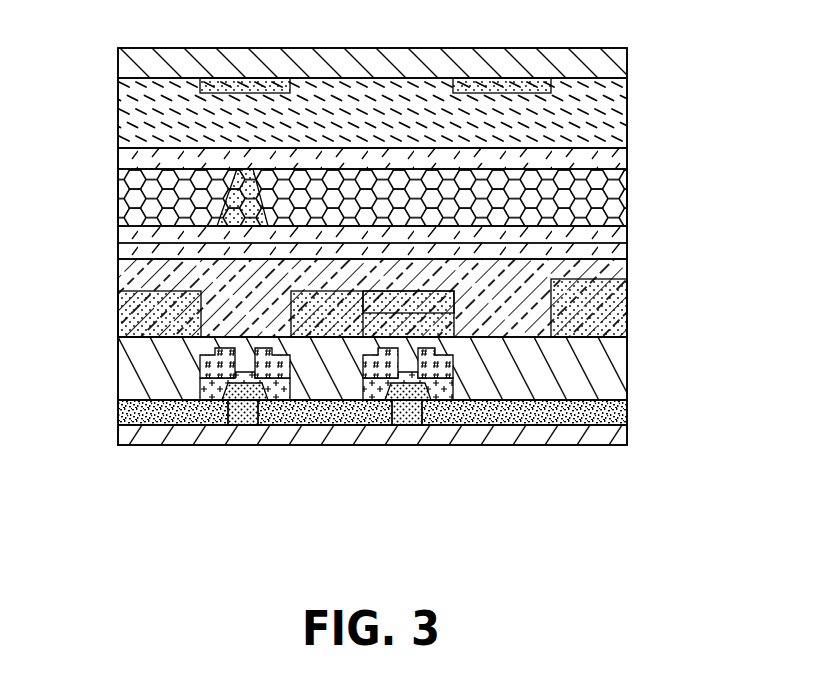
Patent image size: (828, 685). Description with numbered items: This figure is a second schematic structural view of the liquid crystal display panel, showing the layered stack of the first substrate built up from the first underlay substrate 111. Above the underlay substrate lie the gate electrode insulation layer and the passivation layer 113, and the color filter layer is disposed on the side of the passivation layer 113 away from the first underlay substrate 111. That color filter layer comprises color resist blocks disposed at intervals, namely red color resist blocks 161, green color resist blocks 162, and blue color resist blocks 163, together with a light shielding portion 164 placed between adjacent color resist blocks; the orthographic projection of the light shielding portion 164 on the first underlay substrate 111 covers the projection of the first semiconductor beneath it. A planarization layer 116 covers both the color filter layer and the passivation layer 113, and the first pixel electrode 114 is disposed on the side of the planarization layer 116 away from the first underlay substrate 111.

The first underlay substrate 111 is at (612, 432).
The passivation layer 113 is at (600, 386).
The first pixel electrode 114 is at (603, 245).
The planarization layer 116 is at (510, 295).
The red color resist blocks 161 is at (320, 313).
The green color resist blocks 162 is at (138, 302).
The blue color resist blocks 163 is at (605, 305).
The light shielding portion 164 is at (417, 302).